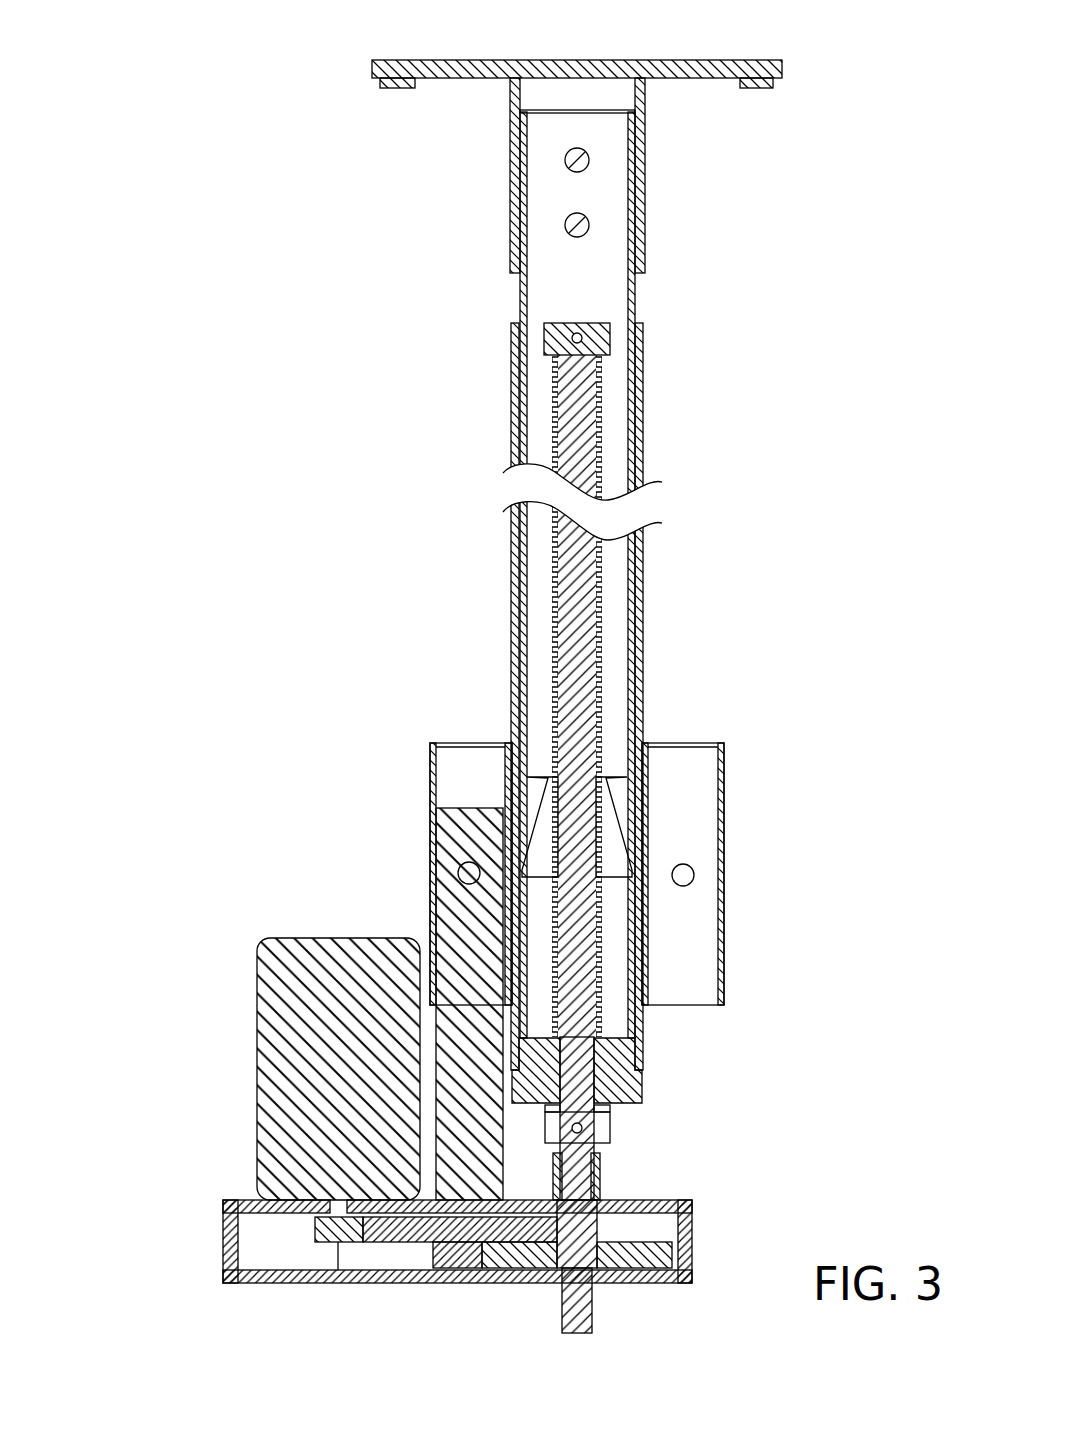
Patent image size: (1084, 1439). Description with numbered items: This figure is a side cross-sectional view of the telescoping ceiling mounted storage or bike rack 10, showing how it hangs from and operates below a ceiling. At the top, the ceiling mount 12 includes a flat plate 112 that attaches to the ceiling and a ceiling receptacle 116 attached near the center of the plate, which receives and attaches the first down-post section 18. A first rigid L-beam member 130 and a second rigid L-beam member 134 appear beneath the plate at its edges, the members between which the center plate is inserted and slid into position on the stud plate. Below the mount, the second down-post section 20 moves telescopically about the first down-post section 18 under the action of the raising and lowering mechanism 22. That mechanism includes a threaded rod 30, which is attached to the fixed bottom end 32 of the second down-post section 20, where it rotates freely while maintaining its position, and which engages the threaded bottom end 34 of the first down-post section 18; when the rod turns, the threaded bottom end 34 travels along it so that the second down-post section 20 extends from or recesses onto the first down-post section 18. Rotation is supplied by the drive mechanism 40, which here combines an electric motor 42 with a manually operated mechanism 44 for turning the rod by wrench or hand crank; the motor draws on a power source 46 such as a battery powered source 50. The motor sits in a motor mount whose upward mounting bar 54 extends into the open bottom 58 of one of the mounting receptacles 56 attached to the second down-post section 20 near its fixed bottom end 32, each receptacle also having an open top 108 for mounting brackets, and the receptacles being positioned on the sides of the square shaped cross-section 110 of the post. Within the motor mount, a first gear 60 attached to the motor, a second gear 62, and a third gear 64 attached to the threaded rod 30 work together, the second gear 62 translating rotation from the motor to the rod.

The telescoping ceiling mounted storage rack 10 is at (283, 407).
The ceiling mount 12 is at (292, 63).
The first down-post section 18 is at (510, 290).
The second down-post section 20 is at (503, 404).
The raising and lowering mechanism 22 is at (193, 1298).
The threaded rod 30 is at (606, 669).
The fixed bottom end 32 is at (616, 1080).
The threaded bottom end 34 is at (608, 824).
The drive mechanism 40 is at (167, 1143).
The electric motor 42 is at (262, 968).
The manually operated mechanism 44 is at (562, 1337).
The power source 46 is at (283, 1004).
The battery powered source 50 is at (203, 1103).
The upward mounting bar 54 is at (445, 915).
The mounting receptacle 56 is at (467, 906).
The open bottom 58 is at (414, 1016).
The first gear 60 is at (320, 1228).
The second gear 62 is at (408, 1231).
The third gear 64 is at (573, 1253).
The open top 108 is at (453, 708).
The square shaped cross-section 110 is at (467, 592).
The flat plate 112 is at (612, 61).
The ceiling receptacle 116 is at (643, 198).
The first rigid L-beam member 130 is at (397, 89).
The second rigid L-beam member 134 is at (762, 89).